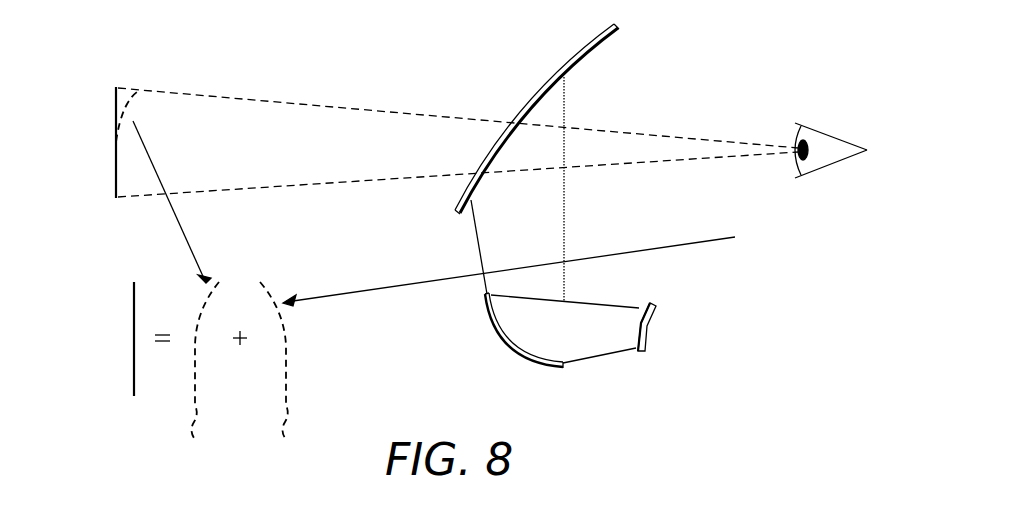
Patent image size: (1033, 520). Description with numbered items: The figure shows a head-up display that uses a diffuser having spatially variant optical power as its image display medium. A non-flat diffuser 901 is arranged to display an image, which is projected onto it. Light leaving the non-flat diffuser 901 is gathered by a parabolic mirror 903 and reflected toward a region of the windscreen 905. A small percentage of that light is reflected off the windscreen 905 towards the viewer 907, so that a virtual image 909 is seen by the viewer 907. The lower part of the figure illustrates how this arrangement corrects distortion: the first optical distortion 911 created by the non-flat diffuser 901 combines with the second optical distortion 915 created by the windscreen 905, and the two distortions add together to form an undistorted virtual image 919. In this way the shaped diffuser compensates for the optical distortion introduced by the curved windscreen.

The non-flat diffuser 901 is at (657, 318).
The parabolic mirror 903 is at (485, 318).
The windscreen 905 is at (603, 46).
The viewer 907 is at (825, 136).
The virtual image 909 is at (116, 103).
The first optical distortion 911 is at (284, 372).
The second optical distortion 915 is at (197, 372).
The undistorted virtual image 919 is at (134, 297).